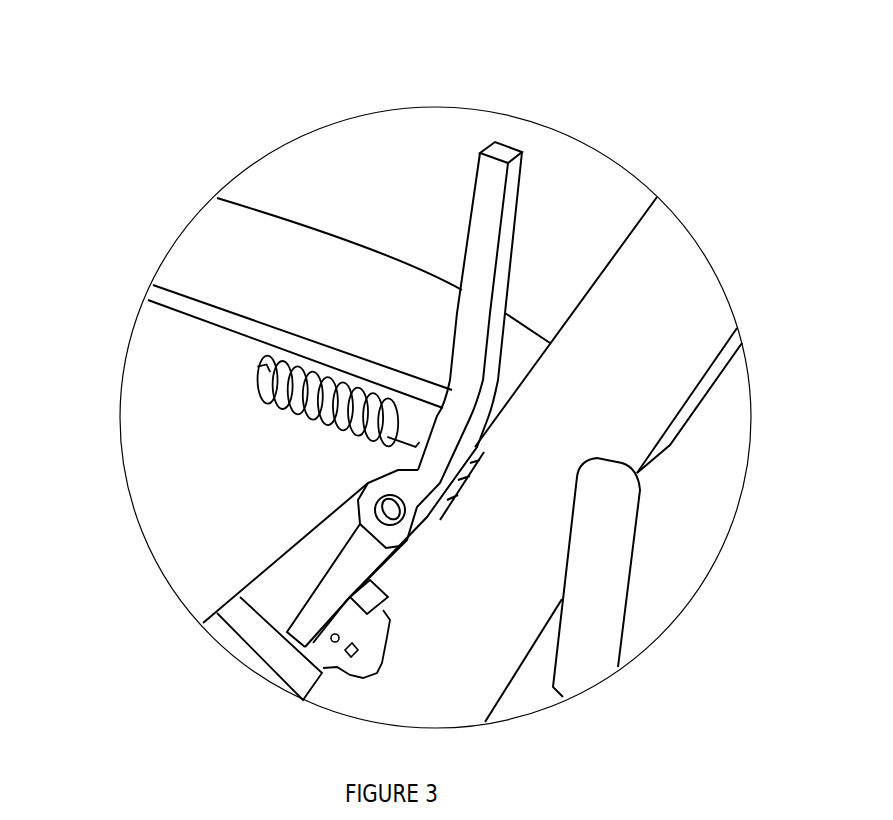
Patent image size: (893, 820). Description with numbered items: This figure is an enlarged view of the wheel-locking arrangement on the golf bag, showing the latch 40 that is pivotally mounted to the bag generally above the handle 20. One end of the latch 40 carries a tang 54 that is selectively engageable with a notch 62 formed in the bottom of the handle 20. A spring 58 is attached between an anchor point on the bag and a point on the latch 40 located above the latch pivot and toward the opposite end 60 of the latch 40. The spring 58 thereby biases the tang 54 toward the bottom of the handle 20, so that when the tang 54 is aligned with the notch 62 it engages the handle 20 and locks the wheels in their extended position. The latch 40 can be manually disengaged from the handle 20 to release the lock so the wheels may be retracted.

The handle 20 is at (677, 300).
The latch 40 is at (377, 341).
The tang 54 is at (350, 620).
The spring 58 is at (298, 360).
The opposite end 60 is at (490, 185).
The notch 62 is at (333, 657).